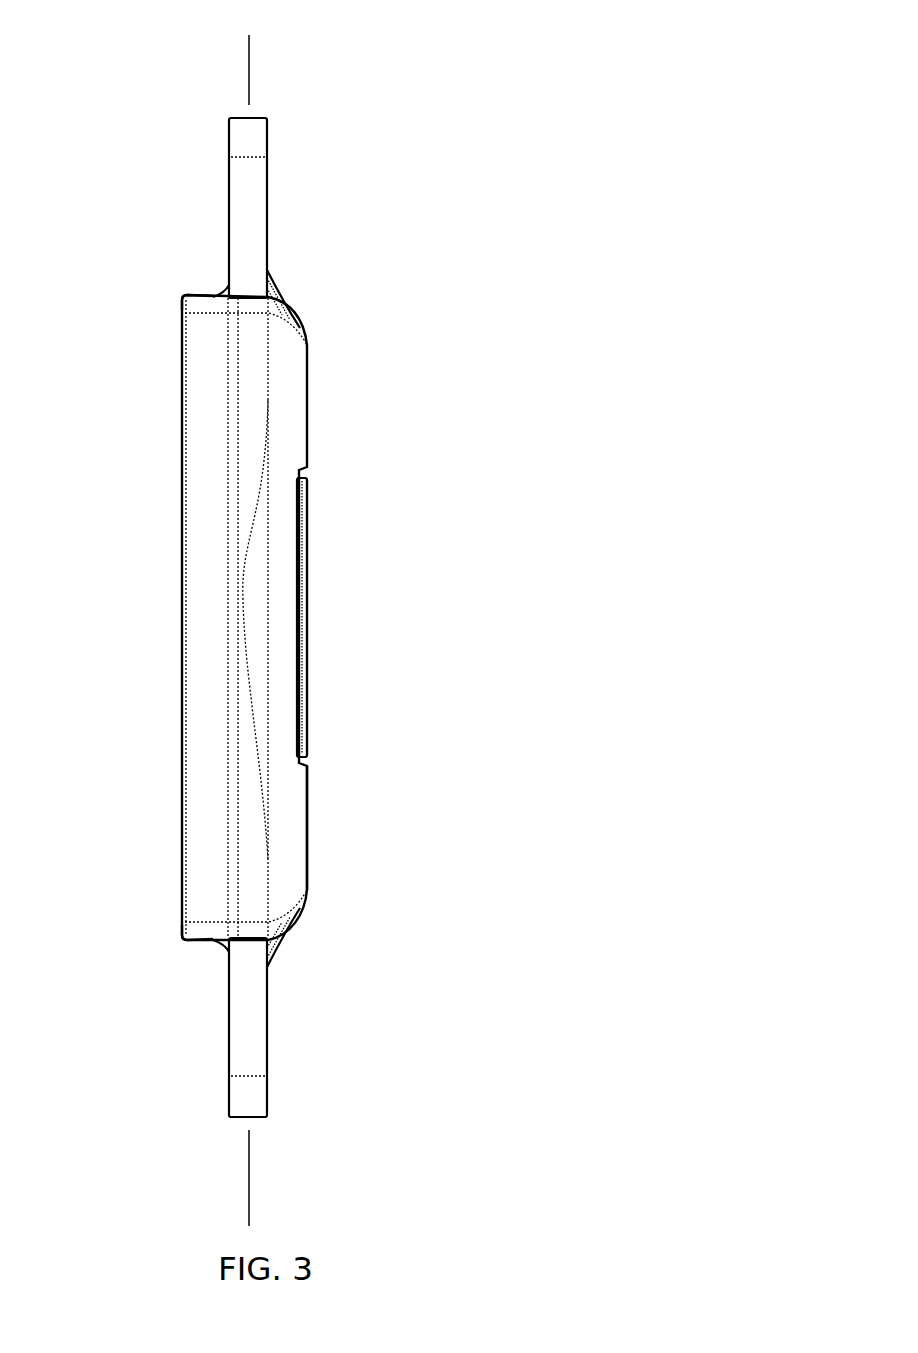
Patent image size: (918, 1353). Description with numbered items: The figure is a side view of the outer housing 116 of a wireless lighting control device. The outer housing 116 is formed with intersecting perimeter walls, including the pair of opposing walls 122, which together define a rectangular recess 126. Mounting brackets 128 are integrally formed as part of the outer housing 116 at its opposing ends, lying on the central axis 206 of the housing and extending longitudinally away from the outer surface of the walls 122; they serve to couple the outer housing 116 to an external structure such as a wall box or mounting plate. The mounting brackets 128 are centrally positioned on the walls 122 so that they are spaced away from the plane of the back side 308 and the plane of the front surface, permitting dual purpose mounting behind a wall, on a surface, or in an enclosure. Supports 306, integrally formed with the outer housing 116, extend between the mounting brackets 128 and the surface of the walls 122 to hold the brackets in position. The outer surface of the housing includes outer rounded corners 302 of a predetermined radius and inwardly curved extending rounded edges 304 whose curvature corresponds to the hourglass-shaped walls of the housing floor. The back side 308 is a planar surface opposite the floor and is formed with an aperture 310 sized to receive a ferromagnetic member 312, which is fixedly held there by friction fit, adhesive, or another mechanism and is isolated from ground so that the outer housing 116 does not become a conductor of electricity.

The outer housing 116 is at (456, 70).
The walls 122 is at (207, 293).
The recess 126 is at (271, 617).
The mounting brackets 128 is at (270, 187).
The central axis 206 is at (236, 1161).
The outer rounded corners 302 is at (292, 338).
The inwardly curved extending rounded edges 304 is at (260, 620).
The supports 306 is at (281, 283).
The back side 308 is at (307, 807).
The aperture 310 is at (297, 548).
The ferromagnetic member 312 is at (313, 662).